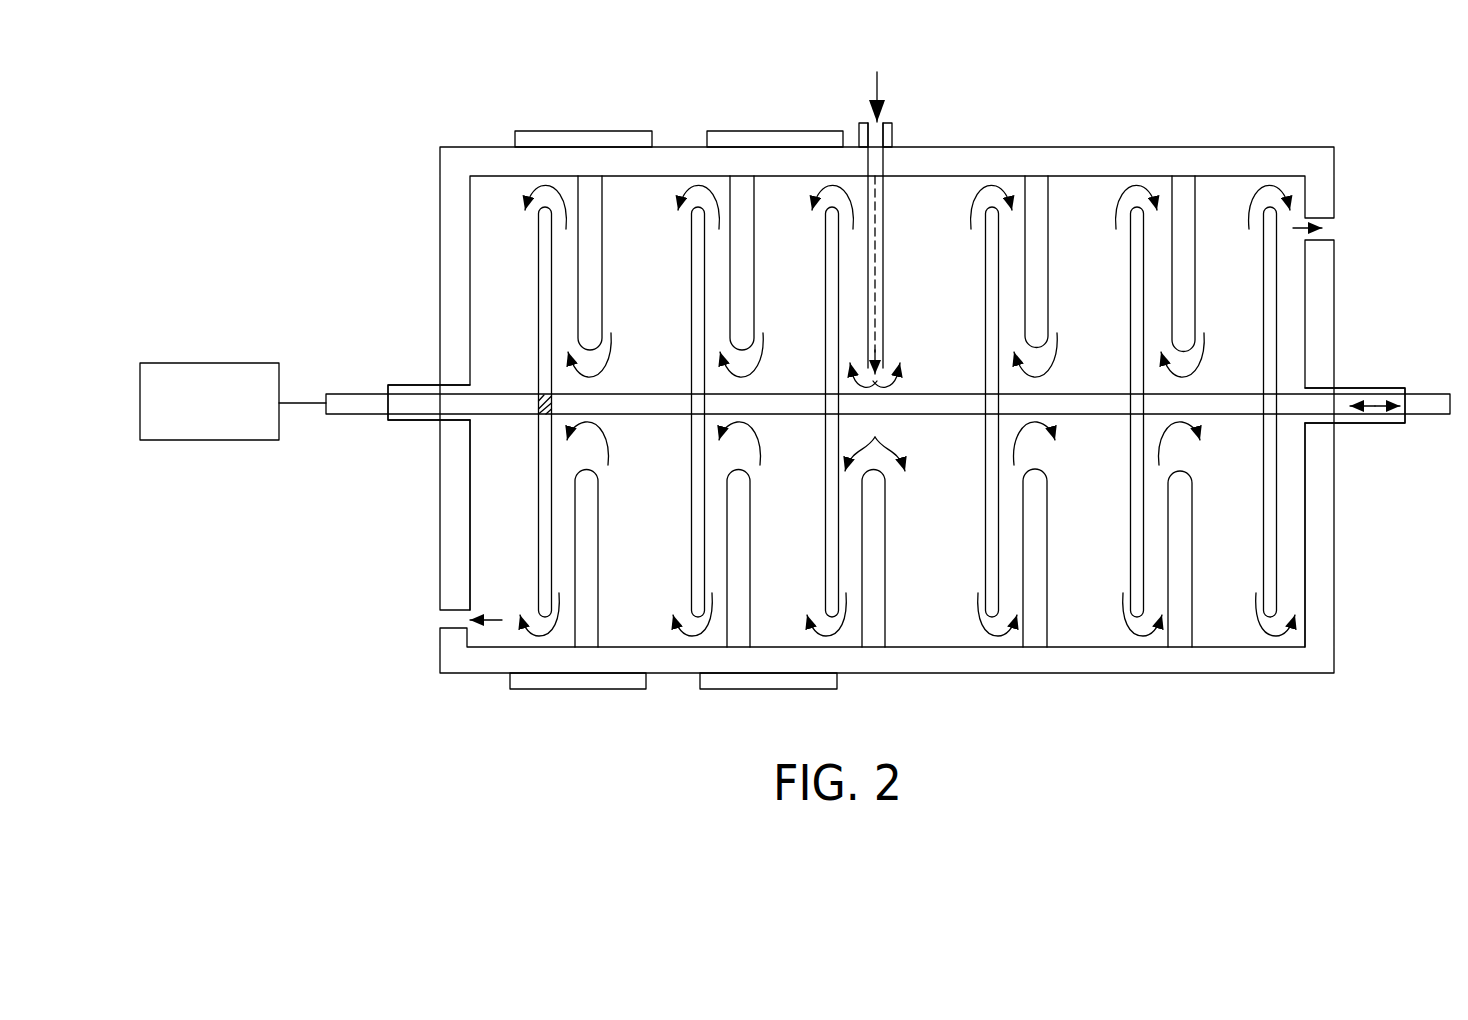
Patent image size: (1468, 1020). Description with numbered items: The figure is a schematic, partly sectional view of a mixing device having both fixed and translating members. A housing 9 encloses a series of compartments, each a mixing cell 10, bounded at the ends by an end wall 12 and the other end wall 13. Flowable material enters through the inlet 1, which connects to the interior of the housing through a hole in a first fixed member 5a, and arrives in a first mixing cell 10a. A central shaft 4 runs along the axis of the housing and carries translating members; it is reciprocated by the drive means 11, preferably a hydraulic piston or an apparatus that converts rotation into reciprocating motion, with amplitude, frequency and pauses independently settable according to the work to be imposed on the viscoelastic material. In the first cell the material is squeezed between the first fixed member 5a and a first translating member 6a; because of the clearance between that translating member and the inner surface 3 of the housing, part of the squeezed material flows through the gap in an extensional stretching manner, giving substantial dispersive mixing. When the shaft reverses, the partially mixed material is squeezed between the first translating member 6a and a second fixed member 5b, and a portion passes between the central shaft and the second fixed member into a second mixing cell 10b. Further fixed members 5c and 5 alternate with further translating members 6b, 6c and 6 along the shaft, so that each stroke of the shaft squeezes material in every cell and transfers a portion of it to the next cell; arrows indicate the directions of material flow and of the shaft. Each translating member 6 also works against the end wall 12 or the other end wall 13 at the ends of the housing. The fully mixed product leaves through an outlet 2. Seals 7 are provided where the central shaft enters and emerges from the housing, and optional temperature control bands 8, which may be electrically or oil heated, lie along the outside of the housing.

The inlet 1 is at (885, 128).
The outlet 2 is at (1330, 227).
The inner surface of the housing 3 is at (1070, 178).
The central shaft 4 is at (1432, 394).
The fixed member 5 is at (1197, 205).
The first fixed member 5a is at (883, 237).
The second fixed member 5b is at (754, 203).
The fixed member 5c is at (578, 300).
The translating member 6 is at (1128, 558).
The first translating member 6a is at (823, 530).
The translating member 6b is at (687, 530).
The translating member 6c is at (540, 539).
The seals 7 is at (415, 384).
The temperature control bands 8 is at (715, 131).
The housing 9 is at (1030, 147).
The mixing cell 10 is at (1210, 583).
The first mixing cell 10a is at (762, 630).
The second mixing cell 10b is at (630, 615).
The drive means 11 is at (200, 363).
The end wall 12 is at (1298, 537).
The other end wall 13 is at (476, 511).